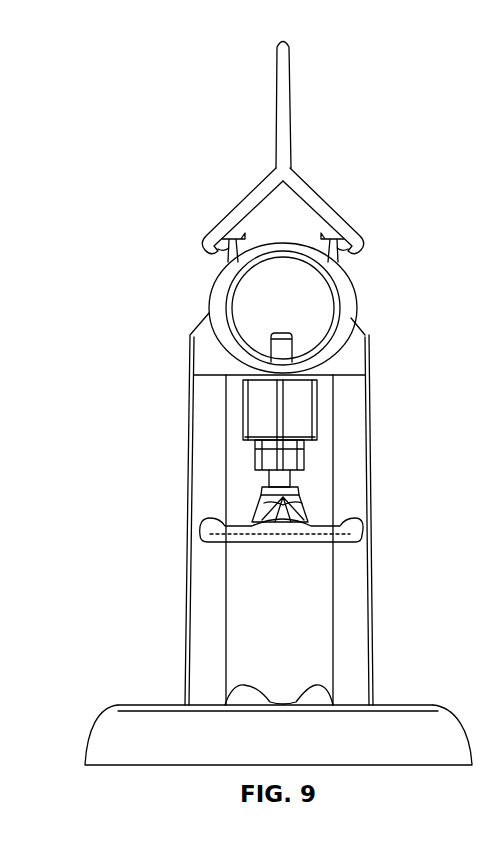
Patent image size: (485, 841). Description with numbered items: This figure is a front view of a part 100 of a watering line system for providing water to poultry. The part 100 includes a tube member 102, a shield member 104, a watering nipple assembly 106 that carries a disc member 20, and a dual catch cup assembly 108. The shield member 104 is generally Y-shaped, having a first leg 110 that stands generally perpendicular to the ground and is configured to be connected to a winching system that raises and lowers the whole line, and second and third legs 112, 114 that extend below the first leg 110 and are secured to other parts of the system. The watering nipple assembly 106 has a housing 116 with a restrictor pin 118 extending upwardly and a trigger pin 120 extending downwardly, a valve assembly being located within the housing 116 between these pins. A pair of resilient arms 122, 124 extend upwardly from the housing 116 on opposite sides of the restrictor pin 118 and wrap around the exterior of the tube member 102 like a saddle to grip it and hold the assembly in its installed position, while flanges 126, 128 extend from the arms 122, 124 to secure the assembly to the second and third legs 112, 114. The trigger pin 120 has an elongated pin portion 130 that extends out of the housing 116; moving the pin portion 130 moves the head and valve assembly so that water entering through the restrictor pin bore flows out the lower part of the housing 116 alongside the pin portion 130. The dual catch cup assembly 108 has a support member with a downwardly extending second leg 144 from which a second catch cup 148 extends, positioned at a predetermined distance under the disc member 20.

The part of watering line system 100 is at (146, 52).
The tube member 102 is at (290, 238).
The shield member 104 is at (293, 66).
The watering nipple assembly 106 is at (322, 382).
The dual catch cup assembly 108 is at (377, 625).
The first leg 110 is at (283, 104).
The second leg 112 is at (232, 208).
The third leg 114 is at (334, 208).
The housing 116 is at (298, 408).
The restrictor pin 118 is at (272, 338).
The trigger pin 120 is at (296, 478).
The resilient arm 122 is at (209, 303).
The resilient arm 124 is at (351, 305).
The flange 126 is at (211, 240).
The flange 128 is at (355, 240).
The pin portion 130 is at (277, 493).
The second leg 144 is at (270, 636).
The second catch cup 148 is at (108, 733).
The disc member 20 is at (367, 530).